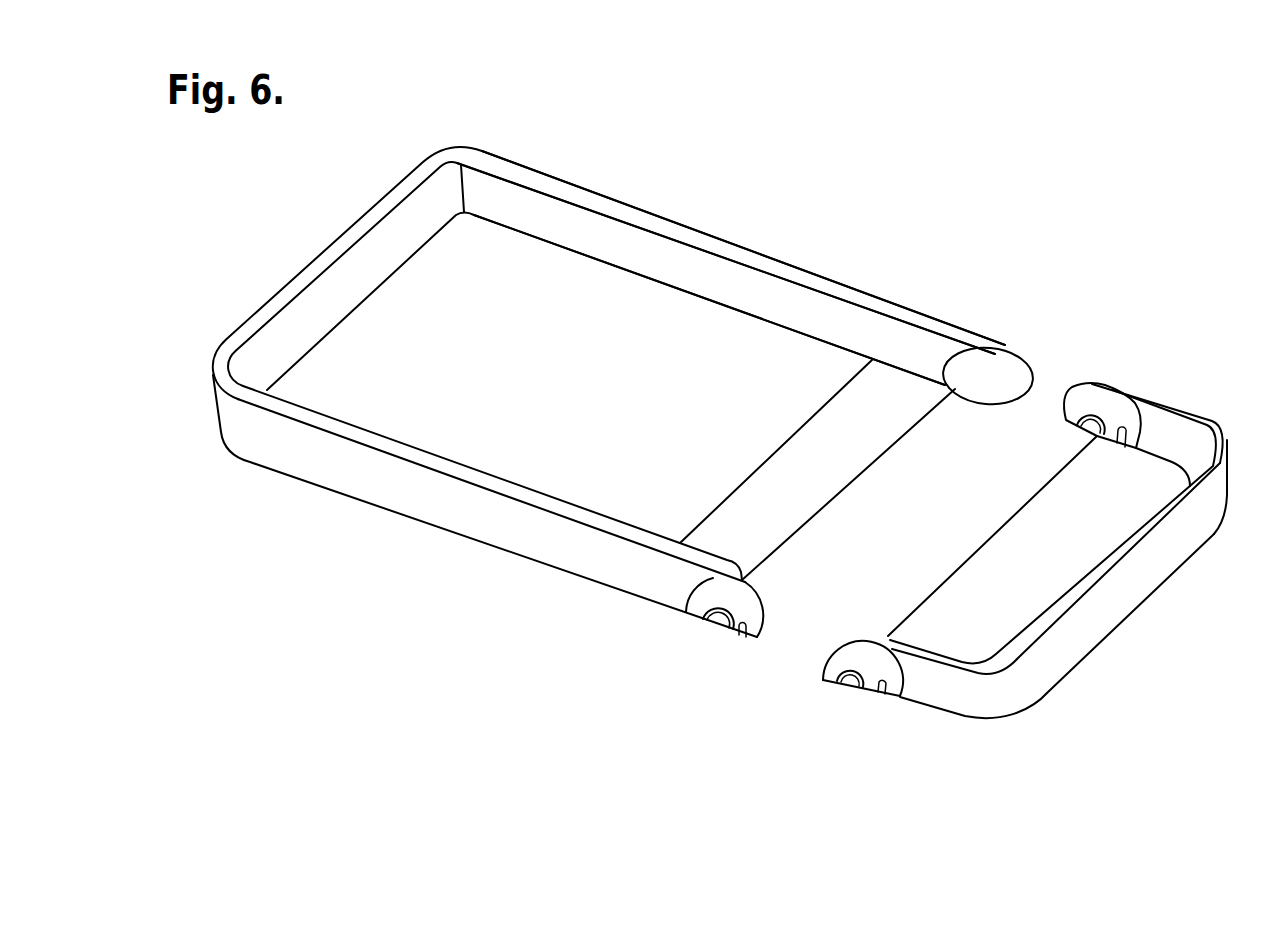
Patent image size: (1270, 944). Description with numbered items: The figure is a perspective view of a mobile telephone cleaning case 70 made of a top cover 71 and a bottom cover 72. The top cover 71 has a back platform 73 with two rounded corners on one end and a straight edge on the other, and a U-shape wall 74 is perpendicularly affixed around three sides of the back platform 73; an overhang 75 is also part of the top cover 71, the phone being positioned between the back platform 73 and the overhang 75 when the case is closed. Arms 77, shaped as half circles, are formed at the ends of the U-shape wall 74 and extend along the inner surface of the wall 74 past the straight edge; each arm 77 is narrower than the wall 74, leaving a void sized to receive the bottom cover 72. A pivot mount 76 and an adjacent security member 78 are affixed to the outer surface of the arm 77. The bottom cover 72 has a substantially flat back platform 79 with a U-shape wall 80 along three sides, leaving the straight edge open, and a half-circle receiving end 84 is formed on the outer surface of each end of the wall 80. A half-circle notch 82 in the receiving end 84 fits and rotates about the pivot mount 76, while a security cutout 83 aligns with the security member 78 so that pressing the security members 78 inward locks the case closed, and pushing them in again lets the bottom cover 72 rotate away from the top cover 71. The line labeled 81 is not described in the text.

The mobile telephone cleaning case 70 is at (277, 143).
The top cover 71 is at (1021, 329).
The bottom cover 72 is at (1248, 419).
The back platform 73 is at (830, 507).
The U-shape wall 74 is at (293, 477).
The overhang 75 is at (360, 447).
The pivot mount 76 is at (700, 622).
The arm 77 is at (763, 636).
The security member 78 is at (735, 640).
The back platform 79 is at (997, 528).
The U-shape wall 80 is at (1024, 709).
The rim edge of second portion 81 is at (1100, 586).
The notch 82 is at (851, 681).
The security cutout 83 is at (879, 692).
The receiving end 84 is at (850, 641).